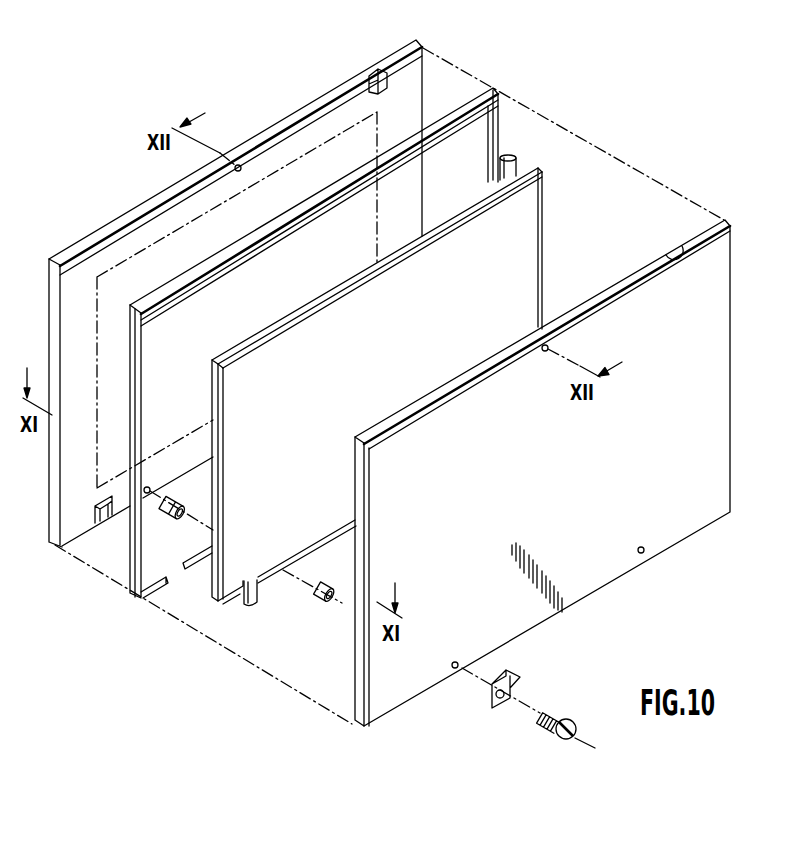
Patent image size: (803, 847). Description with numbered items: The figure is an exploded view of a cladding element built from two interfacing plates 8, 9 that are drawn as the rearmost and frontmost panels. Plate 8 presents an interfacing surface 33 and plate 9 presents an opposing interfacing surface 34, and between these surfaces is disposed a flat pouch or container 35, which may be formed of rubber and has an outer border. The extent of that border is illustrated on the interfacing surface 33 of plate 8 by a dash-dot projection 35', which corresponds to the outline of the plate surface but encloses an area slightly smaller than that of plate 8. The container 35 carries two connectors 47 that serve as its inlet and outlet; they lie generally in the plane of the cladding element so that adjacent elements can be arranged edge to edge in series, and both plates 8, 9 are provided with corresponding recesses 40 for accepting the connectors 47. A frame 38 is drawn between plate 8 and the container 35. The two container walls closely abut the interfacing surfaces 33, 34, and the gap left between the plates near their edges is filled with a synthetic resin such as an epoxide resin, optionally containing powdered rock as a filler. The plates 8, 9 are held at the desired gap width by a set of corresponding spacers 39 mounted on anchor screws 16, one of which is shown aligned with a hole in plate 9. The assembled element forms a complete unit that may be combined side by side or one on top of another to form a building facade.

The interfacing plate 8 is at (217, 293).
The interfacing surface 33 is at (67, 320).
The projection of the container border 35' is at (221, 300).
The frame 38 is at (493, 87).
The flat pouch or container 35 is at (377, 386).
The interfacing surface 34 is at (588, 298).
The interfacing plate 9 is at (737, 499).
The recess 40 is at (371, 65).
The connector 47 is at (517, 158).
The spacer 39 is at (170, 516).
The anchor screw 16 is at (548, 724).